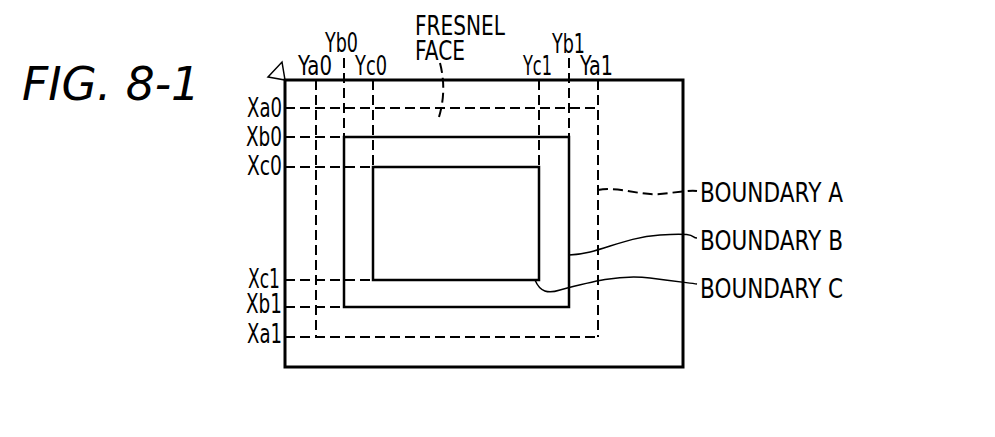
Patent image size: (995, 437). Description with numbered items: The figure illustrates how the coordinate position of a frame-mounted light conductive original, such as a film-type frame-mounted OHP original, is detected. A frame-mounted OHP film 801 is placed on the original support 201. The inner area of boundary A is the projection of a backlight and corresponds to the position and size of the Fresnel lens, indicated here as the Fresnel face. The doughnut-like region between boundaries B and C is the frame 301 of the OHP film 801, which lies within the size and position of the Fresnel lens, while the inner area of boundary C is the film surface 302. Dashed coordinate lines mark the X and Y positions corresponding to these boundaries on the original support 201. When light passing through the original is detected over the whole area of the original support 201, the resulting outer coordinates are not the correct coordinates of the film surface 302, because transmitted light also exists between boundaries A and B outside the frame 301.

The original support 201 is at (677, 101).
The frame 301 is at (503, 302).
The film surface 302 is at (405, 273).
The frame-mounted OHP film 801 is at (456, 280).